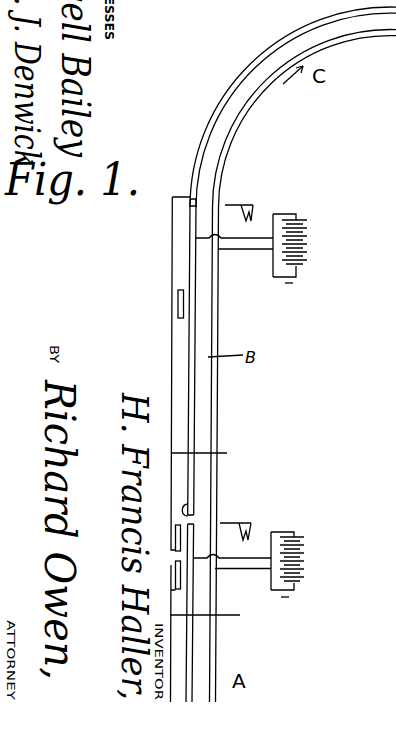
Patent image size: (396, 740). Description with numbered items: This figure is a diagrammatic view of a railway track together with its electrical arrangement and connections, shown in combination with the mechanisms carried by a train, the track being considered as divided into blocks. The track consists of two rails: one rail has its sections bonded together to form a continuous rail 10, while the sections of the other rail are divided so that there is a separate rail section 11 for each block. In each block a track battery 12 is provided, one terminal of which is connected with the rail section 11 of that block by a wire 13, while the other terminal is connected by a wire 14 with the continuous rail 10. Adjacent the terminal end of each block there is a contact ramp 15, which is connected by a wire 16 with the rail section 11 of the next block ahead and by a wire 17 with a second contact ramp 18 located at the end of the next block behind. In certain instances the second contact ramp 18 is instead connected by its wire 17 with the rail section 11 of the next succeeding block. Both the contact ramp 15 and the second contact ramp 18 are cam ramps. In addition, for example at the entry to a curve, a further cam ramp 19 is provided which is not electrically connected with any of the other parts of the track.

The continuous rail 10 is at (217, 418).
The rail section 11 is at (222, 98).
The track battery 12 is at (310, 248).
The wire 13 is at (250, 237).
The wire 14 is at (247, 250).
The contact ramp 15 is at (176, 572).
The wire 16 is at (193, 500).
The wire 17 is at (215, 538).
The second contact ramp 18 is at (191, 523).
The cam ramp 19 is at (178, 313).